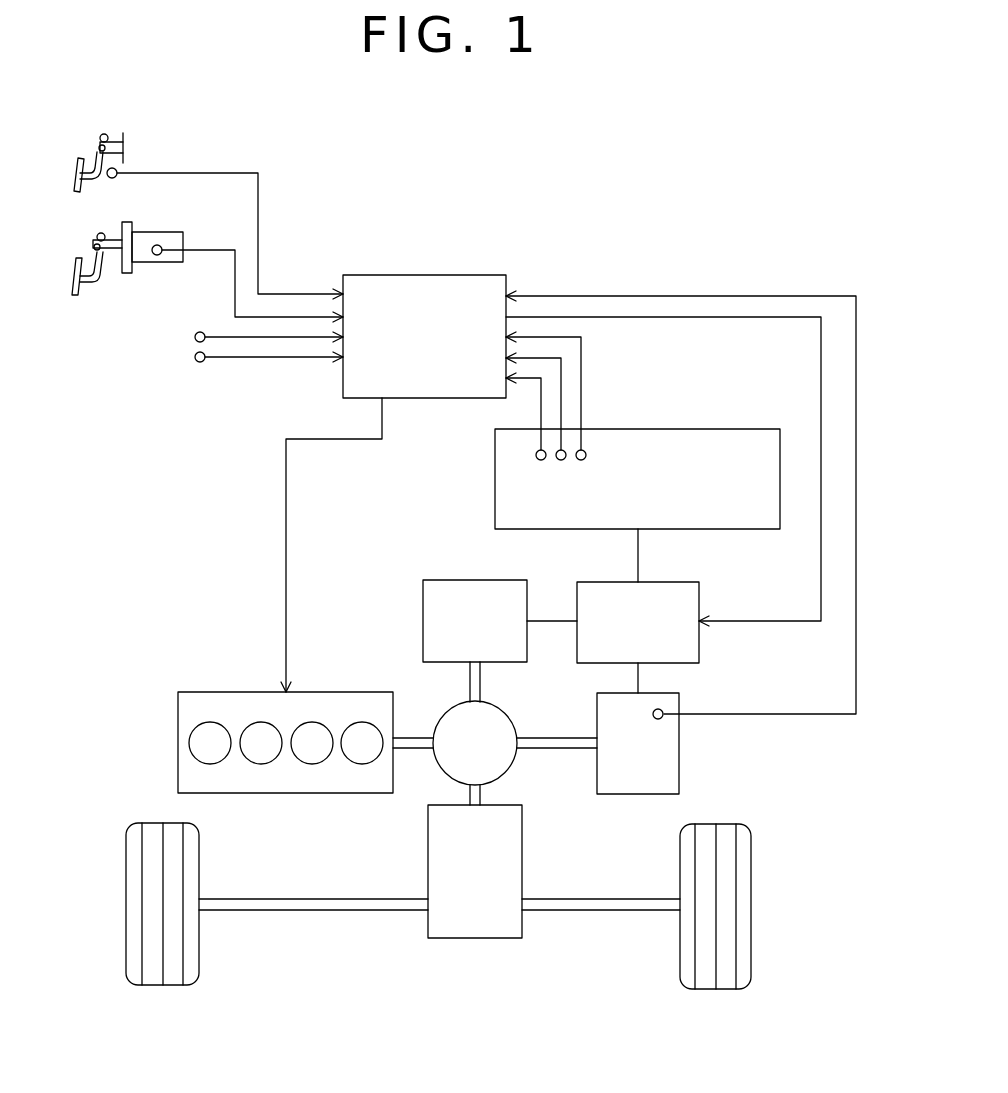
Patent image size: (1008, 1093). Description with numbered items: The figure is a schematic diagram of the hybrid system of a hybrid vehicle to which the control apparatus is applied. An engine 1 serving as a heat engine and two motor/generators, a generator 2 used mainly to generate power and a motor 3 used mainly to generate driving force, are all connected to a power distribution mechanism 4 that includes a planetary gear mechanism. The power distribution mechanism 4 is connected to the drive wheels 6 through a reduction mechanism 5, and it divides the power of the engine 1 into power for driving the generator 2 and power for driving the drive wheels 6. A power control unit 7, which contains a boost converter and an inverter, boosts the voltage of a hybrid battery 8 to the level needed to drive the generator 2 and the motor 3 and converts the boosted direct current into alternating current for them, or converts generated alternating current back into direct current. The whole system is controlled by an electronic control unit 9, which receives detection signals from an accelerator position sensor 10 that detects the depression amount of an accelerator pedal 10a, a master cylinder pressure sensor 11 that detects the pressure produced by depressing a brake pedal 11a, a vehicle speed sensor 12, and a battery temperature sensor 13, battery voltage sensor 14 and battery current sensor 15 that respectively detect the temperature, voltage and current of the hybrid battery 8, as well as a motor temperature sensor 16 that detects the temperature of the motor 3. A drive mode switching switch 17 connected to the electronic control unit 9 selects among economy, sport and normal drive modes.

The engine 1 is at (318, 794).
The generator 2 is at (441, 580).
The motor 3 is at (679, 752).
The power distribution mechanism 4 is at (447, 714).
The reduction mechanism 5 is at (427, 829).
The drive wheels 6 is at (172, 986).
The power control unit 7 is at (699, 650).
The hybrid battery 8 is at (738, 429).
The electronic control unit 9 is at (423, 275).
The accelerator position sensor 10 is at (113, 179).
The accelerator pedal 10a is at (72, 176).
The master cylinder pressure sensor 11 is at (162, 245).
The brake pedal 11a is at (88, 287).
The vehicle speed sensor 12 is at (195, 336).
The battery temperature sensor 13 is at (538, 460).
The battery voltage sensor 14 is at (561, 460).
The battery current sensor 15 is at (584, 460).
The motor temperature sensor 16 is at (652, 716).
The drive mode switching switch 17 is at (195, 359).